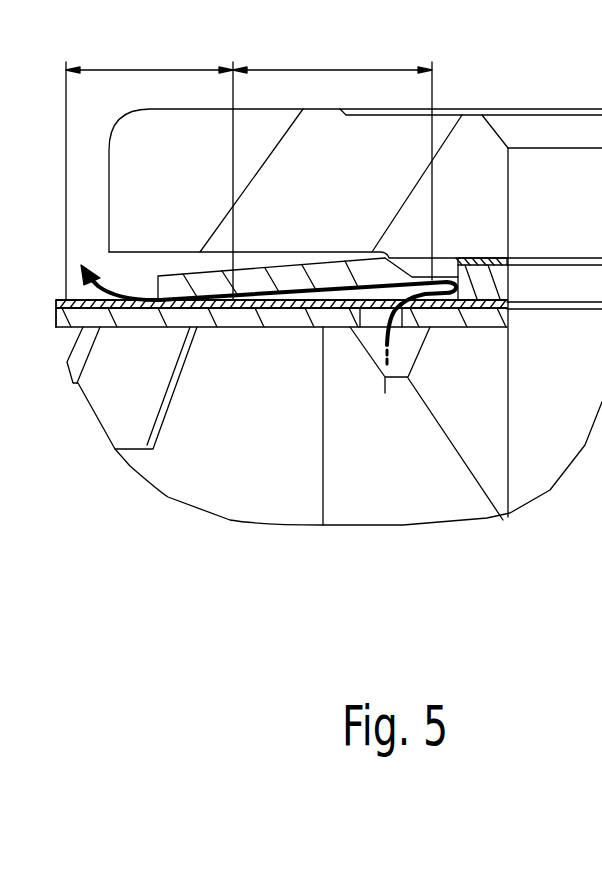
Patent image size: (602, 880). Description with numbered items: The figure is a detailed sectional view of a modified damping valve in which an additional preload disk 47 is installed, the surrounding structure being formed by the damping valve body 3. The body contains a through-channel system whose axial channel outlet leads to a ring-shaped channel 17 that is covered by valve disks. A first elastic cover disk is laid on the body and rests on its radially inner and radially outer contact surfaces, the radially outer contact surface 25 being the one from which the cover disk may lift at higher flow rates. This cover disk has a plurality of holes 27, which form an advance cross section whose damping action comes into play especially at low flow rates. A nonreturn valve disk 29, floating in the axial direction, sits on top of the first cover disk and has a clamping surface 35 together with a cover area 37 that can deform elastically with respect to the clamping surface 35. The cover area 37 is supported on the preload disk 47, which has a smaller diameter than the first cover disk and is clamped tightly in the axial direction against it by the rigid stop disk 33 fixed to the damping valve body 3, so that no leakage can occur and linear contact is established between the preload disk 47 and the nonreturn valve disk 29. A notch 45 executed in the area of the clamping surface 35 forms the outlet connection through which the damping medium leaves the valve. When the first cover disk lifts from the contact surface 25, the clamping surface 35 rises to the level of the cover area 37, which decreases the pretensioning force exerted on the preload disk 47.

The damping valve body 3 is at (417, 508).
The ring-shaped channel 17 is at (413, 395).
The radially outer contact surface 25 is at (333, 330).
The holes 27 is at (360, 330).
The nonreturn valve disk 29 is at (422, 255).
The stop disk 33 is at (445, 130).
The clamping surface 35 is at (149, 169).
The cover area 37 is at (332, 159).
The notch 45 is at (73, 328).
The preload disk 47 is at (484, 298).